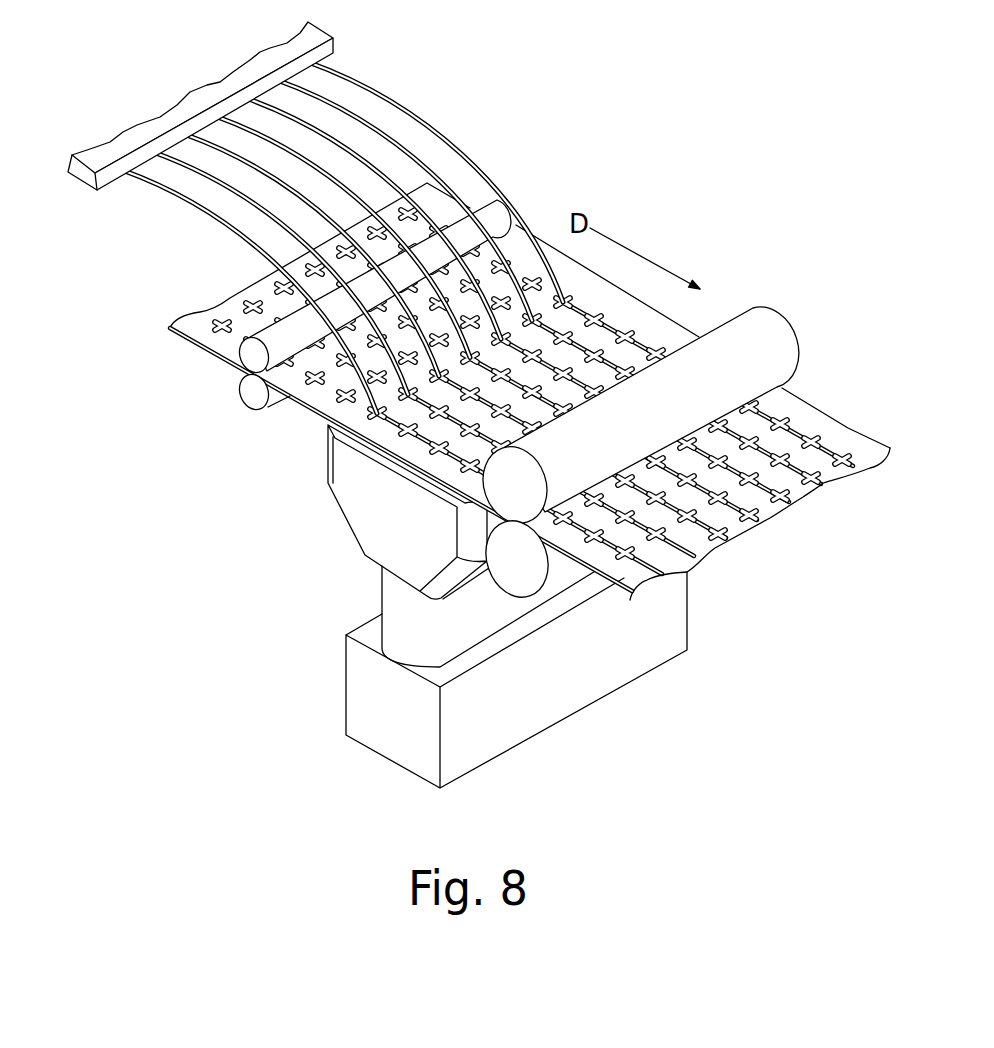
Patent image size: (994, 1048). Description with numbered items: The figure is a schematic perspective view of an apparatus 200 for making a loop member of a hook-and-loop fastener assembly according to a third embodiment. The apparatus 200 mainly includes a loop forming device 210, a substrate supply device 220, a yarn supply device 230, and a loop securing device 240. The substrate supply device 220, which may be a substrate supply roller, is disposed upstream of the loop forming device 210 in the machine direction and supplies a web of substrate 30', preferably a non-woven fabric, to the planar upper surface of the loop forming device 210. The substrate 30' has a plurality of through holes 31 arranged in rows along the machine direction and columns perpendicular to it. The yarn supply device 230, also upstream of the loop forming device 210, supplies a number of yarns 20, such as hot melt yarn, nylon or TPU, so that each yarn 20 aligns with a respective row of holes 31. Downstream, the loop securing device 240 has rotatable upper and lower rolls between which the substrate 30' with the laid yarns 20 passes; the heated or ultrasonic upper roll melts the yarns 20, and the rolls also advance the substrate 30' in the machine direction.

The yarn 20 is at (391, 98).
The substrate 30' is at (506, 391).
The through hole 31 is at (338, 381).
The apparatus 200 is at (364, 781).
The loop forming device 210 is at (355, 517).
The substrate supply device 220 is at (250, 396).
The yarn supply device 230 is at (110, 183).
The loop securing device 240 is at (757, 335).